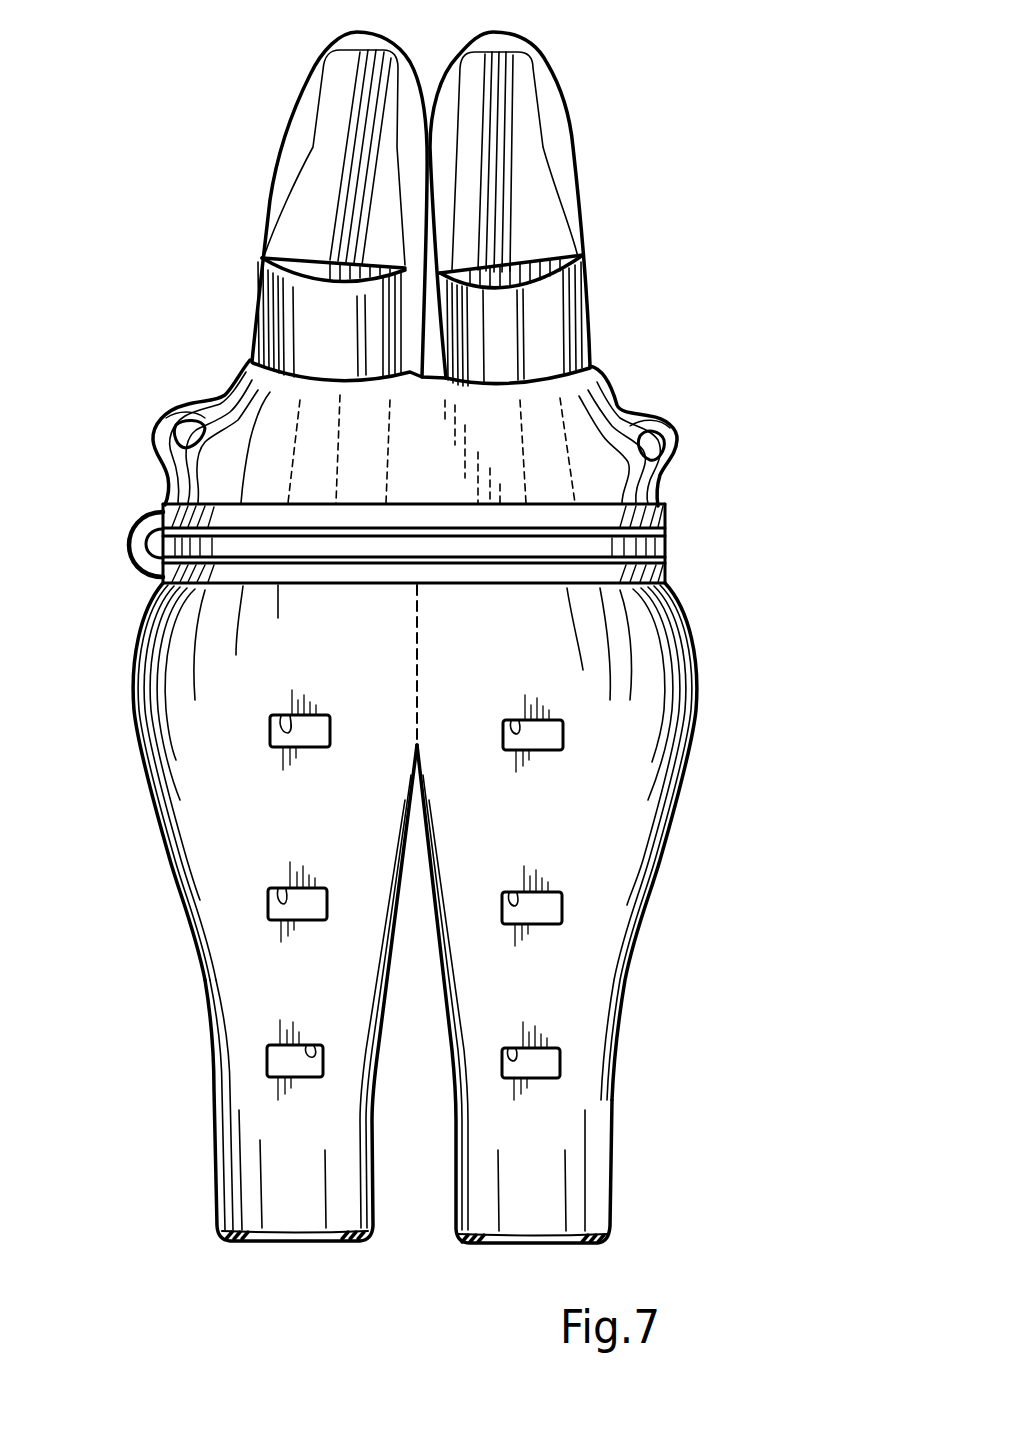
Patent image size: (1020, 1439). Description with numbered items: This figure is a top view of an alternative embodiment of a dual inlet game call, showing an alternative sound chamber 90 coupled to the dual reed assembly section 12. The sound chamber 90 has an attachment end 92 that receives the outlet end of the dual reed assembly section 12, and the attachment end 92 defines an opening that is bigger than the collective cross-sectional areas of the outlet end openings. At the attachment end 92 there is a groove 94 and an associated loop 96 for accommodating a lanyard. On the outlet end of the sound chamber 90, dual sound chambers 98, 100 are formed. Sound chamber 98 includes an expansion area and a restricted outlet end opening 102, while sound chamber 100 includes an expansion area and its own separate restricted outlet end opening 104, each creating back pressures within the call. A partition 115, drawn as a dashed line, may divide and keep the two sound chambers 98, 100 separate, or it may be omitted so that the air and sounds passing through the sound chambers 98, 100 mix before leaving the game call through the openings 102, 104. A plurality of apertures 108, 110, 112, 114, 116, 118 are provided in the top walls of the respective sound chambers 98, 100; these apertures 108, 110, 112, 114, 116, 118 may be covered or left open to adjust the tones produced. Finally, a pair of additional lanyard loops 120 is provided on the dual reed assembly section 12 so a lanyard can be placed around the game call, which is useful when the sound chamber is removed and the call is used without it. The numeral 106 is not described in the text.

The dual reed assembly section 12 is at (431, 269).
The lanyard loops 120 is at (180, 402).
The loop 96 is at (140, 517).
The groove 94 is at (667, 548).
The attachment end 92 is at (676, 561).
The sound chamber 90 is at (411, 948).
The left side panel 106 is at (128, 723).
The sound chamber 98 is at (637, 966).
The sound chamber 100 is at (241, 1025).
The restricted outlet end opening 104 is at (278, 1242).
The restricted outlet end opening 102 is at (537, 1244).
The partition 115 is at (417, 630).
The aperture 114 is at (284, 716).
The aperture 116 is at (282, 889).
The aperture 118 is at (311, 1046).
The aperture 108 is at (514, 721).
The aperture 110 is at (508, 893).
The aperture 112 is at (510, 1049).